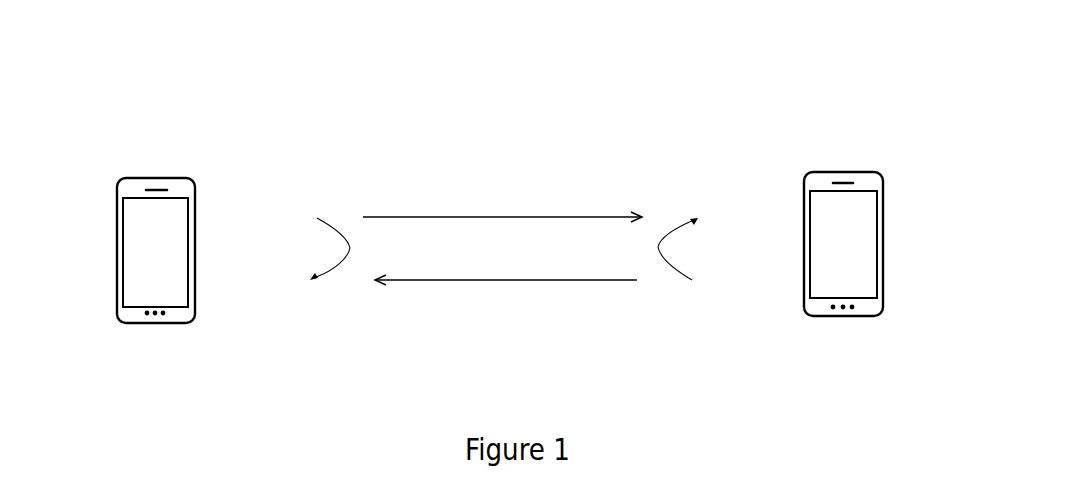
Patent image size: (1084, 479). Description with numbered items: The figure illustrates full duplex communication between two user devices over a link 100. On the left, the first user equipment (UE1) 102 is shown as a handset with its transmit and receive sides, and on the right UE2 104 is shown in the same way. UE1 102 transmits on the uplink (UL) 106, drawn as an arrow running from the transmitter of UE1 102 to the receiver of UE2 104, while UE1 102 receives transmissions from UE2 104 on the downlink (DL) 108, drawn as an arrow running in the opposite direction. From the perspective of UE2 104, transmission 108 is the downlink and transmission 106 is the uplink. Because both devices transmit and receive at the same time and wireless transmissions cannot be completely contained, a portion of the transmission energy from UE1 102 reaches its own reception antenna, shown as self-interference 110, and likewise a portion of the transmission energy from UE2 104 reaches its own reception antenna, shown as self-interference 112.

The link 100 is at (743, 64).
The user equipment 1 (UE1) 102 is at (117, 257).
The UE2 104 is at (885, 240).
The uplink (UL) 106 is at (453, 217).
The downlink (DL) 108 is at (448, 280).
The self-interference 110 is at (354, 250).
The self-interference 112 is at (655, 250).